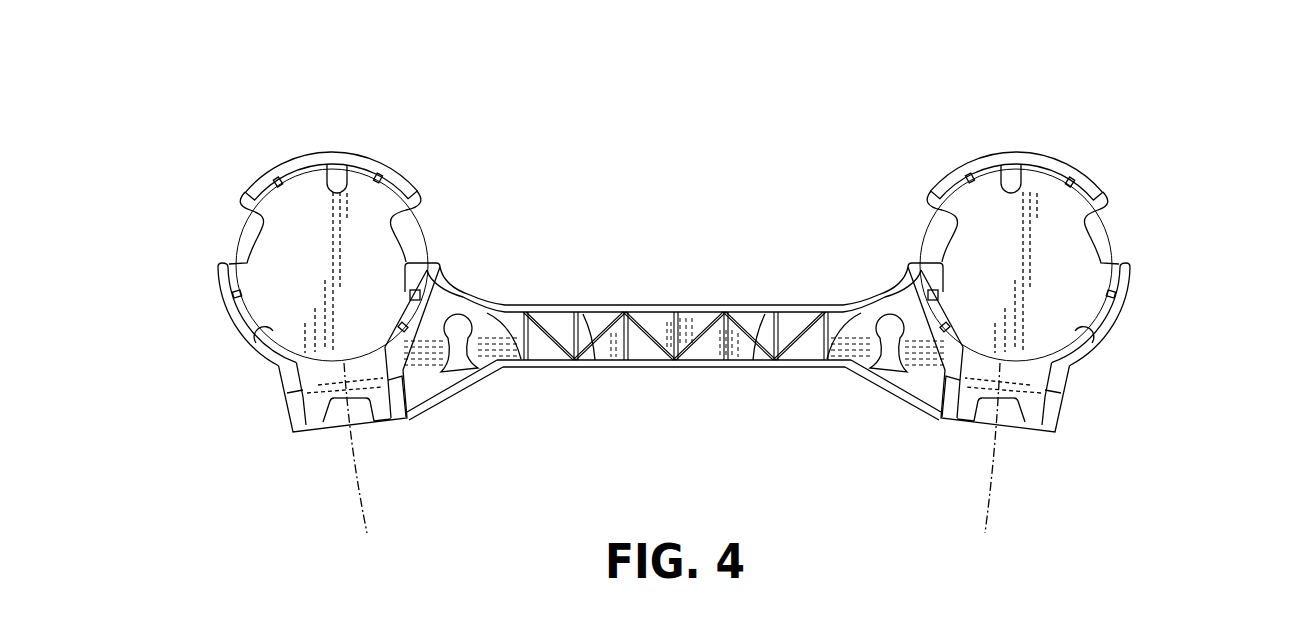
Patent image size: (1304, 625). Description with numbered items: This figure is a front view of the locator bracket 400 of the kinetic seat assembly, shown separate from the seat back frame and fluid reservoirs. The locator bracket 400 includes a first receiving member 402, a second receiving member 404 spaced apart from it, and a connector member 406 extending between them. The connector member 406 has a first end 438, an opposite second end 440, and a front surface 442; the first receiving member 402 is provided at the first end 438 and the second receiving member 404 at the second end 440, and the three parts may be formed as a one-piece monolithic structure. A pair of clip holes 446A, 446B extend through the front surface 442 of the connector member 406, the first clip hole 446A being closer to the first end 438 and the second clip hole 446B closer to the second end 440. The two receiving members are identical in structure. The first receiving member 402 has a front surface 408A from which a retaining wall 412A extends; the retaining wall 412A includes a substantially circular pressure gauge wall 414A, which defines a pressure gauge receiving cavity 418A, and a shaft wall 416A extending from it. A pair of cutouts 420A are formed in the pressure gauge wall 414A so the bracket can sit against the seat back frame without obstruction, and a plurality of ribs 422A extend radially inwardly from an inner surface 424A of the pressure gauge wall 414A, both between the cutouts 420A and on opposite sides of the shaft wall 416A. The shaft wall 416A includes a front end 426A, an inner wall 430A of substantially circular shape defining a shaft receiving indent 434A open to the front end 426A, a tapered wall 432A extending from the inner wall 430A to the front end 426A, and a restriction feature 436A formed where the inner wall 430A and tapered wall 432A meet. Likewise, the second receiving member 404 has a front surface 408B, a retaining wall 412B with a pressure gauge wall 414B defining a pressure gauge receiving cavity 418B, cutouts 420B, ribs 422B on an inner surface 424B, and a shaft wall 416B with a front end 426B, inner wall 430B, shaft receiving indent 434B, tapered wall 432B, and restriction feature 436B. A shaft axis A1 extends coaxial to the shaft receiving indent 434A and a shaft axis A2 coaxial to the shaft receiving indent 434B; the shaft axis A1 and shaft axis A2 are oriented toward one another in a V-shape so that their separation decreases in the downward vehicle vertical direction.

The locator bracket 400 is at (722, 125).
The first receiving member 402 is at (305, 138).
The second receiving member 404 is at (1043, 142).
The connector member 406 is at (783, 296).
The front surface 408A is at (382, 250).
The front surface 408B is at (1082, 242).
The retaining wall 412A is at (385, 162).
The retaining wall 412B is at (970, 162).
The pressure gauge wall 414A is at (212, 284).
The pressure gauge wall 414B is at (1140, 284).
The shaft wall 416A is at (283, 410).
The shaft wall 416B is at (1088, 404).
The pressure gauge receiving cavity 418A is at (278, 255).
The pressure gauge receiving cavity 418B is at (972, 240).
The cutouts 420A is at (407, 212).
The cutouts 420B is at (1100, 212).
The ribs 422A is at (346, 192).
The ribs 422B is at (1003, 183).
The inner surface 424A is at (253, 310).
The inner surface 424B is at (1093, 317).
The front end 426A is at (402, 418).
The front end 426B is at (1050, 416).
The inner wall 430A is at (335, 413).
The inner wall 430B is at (982, 413).
The tapered wall 432A is at (383, 420).
The tapered wall 432B is at (1027, 423).
The shaft receiving indent 434A is at (332, 423).
The shaft receiving indent 434B is at (980, 422).
The restriction feature 436A is at (360, 423).
The restriction feature 436B is at (1010, 430).
The first end 438 is at (420, 378).
The second end 440 is at (898, 375).
The front surface 442 is at (670, 318).
The first clip hole 446A is at (458, 332).
The second clip hole 446B is at (890, 338).
The shaft axis A1 is at (360, 503).
The shaft axis A2 is at (987, 515).